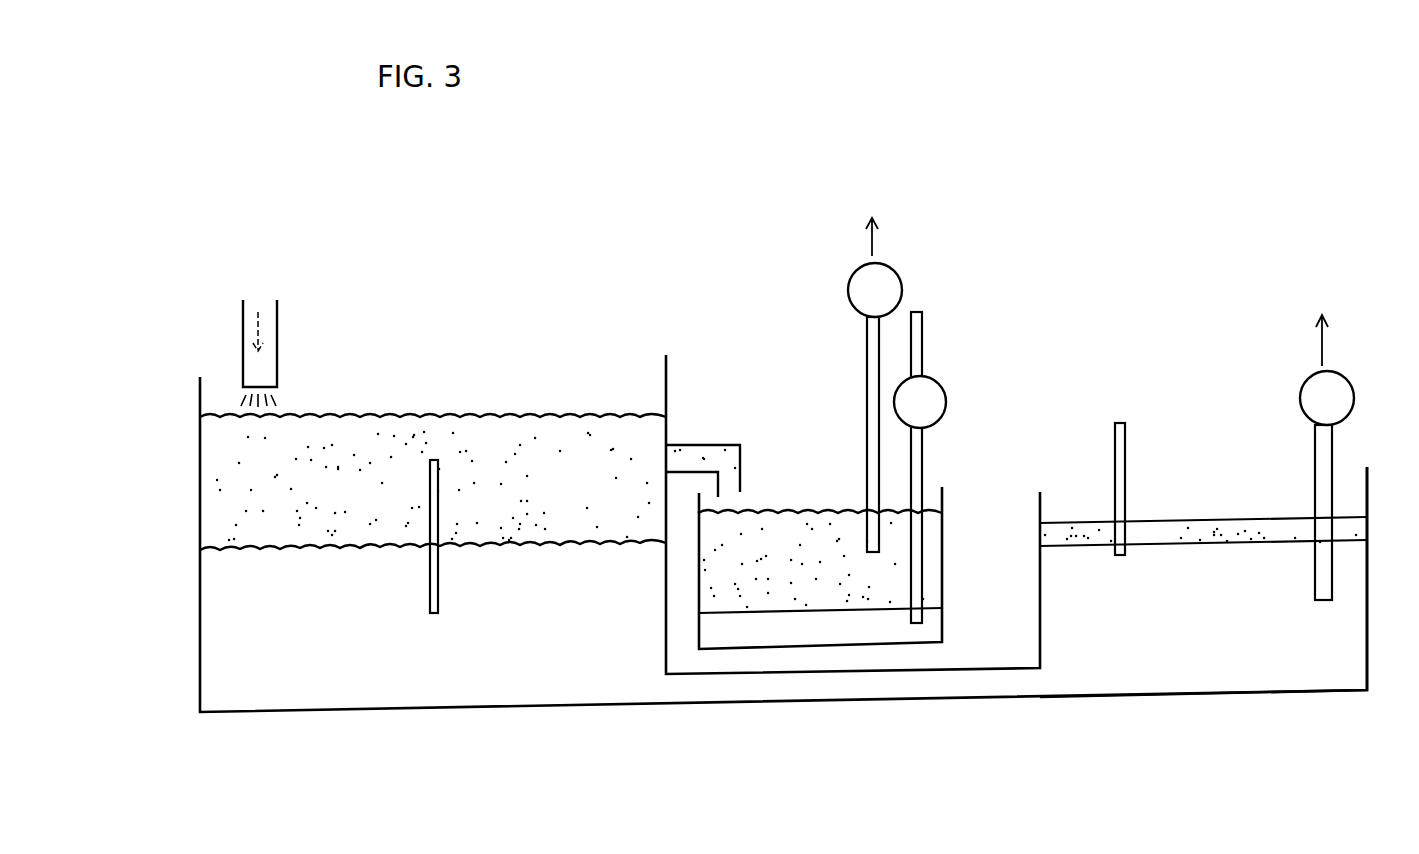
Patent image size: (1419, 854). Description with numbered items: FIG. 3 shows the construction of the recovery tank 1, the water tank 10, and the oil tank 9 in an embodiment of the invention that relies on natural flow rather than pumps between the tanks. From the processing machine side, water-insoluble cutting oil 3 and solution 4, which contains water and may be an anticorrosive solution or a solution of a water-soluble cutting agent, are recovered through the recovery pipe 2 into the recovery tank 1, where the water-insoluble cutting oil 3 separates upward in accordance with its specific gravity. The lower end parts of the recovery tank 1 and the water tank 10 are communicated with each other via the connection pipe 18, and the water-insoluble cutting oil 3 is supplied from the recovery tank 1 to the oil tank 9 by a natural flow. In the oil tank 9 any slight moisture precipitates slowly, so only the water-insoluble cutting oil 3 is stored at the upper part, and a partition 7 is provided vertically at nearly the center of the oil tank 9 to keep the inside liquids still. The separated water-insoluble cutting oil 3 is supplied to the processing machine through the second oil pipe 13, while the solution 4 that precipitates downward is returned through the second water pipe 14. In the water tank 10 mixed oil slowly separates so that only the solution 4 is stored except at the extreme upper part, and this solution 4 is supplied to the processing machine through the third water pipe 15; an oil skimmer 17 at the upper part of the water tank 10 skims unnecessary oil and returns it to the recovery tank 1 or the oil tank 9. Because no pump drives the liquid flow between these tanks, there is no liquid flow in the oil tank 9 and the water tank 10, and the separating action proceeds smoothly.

The recovery tank 1 is at (318, 714).
The recovery pipe 2 is at (277, 346).
The water-insoluble cutting oil 3 is at (322, 495).
The solution 4 is at (328, 647).
The partition 7 is at (438, 598).
The oil tank 9 is at (942, 577).
The water tank 10 is at (1270, 697).
The second oil pipe 13 is at (866, 368).
The second water pipe 14 is at (922, 458).
The third water pipe 15 is at (1332, 452).
The oil skimmer 17 is at (1125, 440).
The connection pipe 18 is at (812, 690).